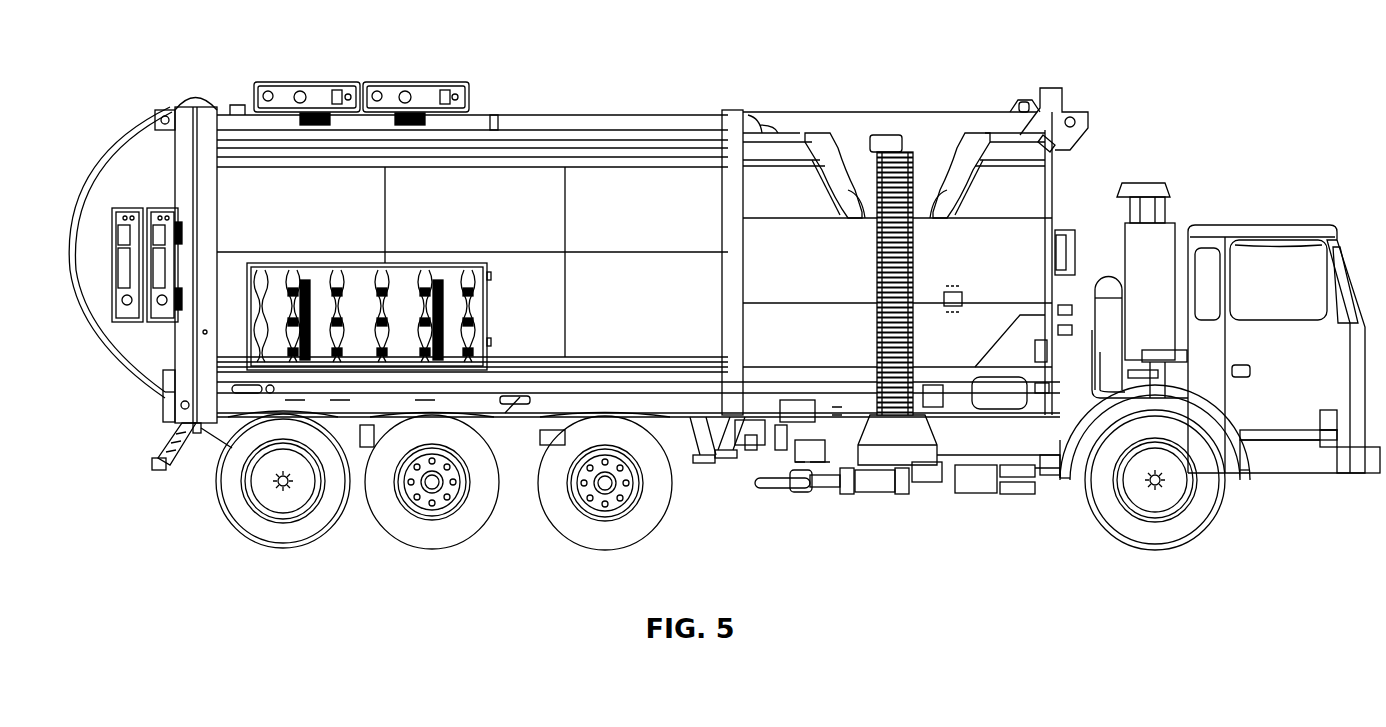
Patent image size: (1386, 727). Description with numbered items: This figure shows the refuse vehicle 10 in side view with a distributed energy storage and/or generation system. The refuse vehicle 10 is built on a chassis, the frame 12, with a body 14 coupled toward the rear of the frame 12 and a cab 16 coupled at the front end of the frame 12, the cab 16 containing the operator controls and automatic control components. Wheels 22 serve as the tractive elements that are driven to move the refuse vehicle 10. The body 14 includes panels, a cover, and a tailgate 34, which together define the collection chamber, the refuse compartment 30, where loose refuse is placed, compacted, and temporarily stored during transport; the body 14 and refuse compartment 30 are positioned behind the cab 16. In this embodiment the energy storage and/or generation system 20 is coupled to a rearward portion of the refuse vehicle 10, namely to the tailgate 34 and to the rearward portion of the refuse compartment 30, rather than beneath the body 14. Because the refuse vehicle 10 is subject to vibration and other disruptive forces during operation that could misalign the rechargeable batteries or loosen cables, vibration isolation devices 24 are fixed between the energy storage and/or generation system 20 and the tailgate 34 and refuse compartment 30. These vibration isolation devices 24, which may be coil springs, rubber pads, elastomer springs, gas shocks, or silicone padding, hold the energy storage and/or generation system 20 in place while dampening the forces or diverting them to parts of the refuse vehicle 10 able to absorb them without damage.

The refuse vehicle 10 is at (1303, 104).
The frame 12 is at (780, 405).
The body 14 is at (962, 118).
The cab 16 is at (1282, 228).
The energy storage and/or generation system 20 is at (135, 208).
The wheels 22 is at (190, 470).
The vibration isolation devices 24 is at (178, 222).
The refuse compartment 30 is at (618, 118).
The tailgate 34 is at (88, 297).